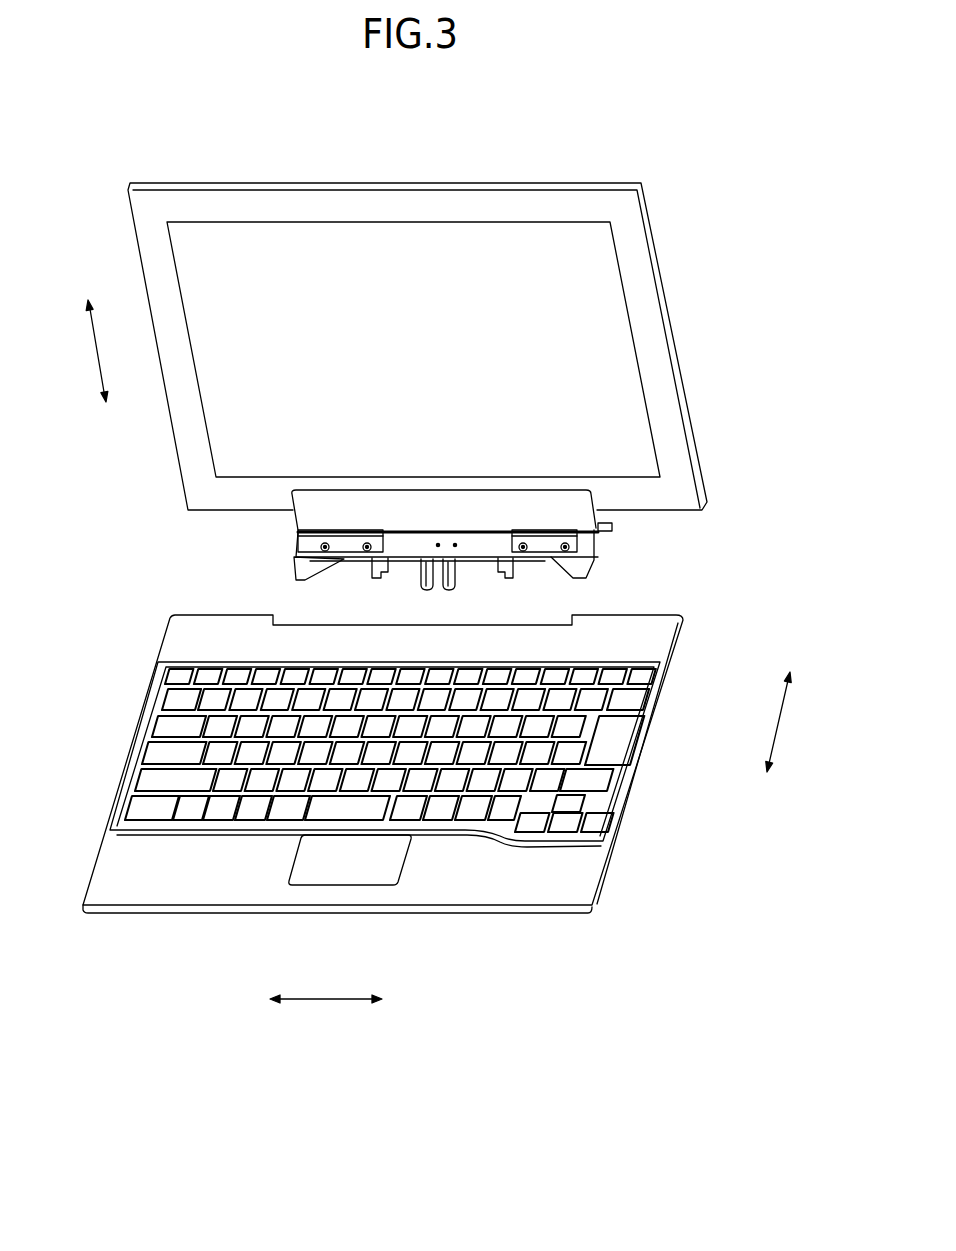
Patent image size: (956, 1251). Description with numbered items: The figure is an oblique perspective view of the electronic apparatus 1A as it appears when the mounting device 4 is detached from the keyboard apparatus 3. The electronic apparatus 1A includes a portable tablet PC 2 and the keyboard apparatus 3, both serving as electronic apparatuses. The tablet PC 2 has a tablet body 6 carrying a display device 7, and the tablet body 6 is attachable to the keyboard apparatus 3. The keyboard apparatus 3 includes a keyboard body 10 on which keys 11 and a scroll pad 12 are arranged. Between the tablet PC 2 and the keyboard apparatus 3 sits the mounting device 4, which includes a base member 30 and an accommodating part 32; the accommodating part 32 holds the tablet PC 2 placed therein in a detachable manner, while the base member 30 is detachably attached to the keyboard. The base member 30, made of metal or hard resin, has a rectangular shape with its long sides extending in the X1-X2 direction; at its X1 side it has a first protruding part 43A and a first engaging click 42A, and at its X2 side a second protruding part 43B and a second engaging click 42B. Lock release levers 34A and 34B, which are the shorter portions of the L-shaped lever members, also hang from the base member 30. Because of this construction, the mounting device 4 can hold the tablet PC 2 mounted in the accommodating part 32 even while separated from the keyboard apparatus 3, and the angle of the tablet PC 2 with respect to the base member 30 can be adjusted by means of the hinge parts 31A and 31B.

The electronic apparatus 1A is at (91, 169).
The tablet PC 2 is at (690, 334).
The keyboard apparatus 3 is at (628, 846).
The mounting device 4 is at (634, 531).
The tablet body 6 is at (672, 428).
The display device 7 is at (403, 240).
The keyboard body 10 is at (102, 873).
The keys 11 is at (168, 723).
The scroll pad 12 is at (338, 873).
The base member 30 is at (478, 543).
The hinge part 31A is at (550, 537).
The hinge part 31B is at (350, 535).
The accommodating part 32 is at (370, 512).
The lock release lever 34A is at (450, 587).
The lock release lever 34B is at (428, 586).
The first engaging click 42A is at (505, 580).
The second engaging click 42B is at (380, 578).
The first protruding part 43A is at (583, 567).
The second protruding part 43B is at (306, 566).